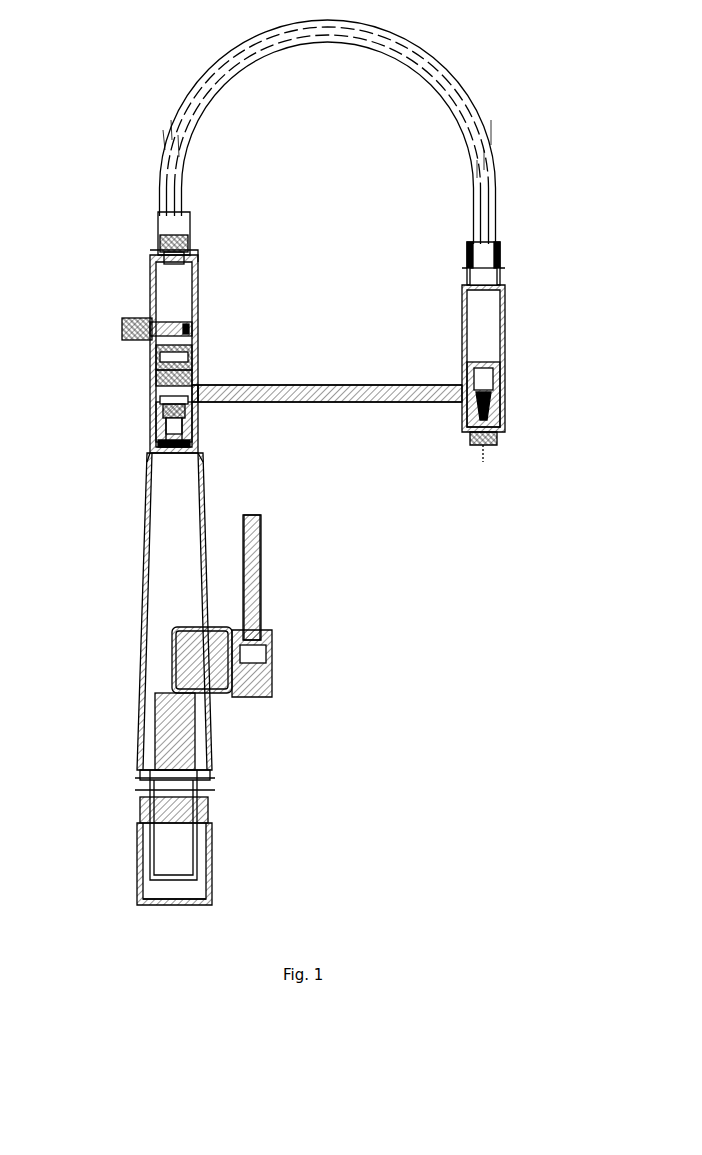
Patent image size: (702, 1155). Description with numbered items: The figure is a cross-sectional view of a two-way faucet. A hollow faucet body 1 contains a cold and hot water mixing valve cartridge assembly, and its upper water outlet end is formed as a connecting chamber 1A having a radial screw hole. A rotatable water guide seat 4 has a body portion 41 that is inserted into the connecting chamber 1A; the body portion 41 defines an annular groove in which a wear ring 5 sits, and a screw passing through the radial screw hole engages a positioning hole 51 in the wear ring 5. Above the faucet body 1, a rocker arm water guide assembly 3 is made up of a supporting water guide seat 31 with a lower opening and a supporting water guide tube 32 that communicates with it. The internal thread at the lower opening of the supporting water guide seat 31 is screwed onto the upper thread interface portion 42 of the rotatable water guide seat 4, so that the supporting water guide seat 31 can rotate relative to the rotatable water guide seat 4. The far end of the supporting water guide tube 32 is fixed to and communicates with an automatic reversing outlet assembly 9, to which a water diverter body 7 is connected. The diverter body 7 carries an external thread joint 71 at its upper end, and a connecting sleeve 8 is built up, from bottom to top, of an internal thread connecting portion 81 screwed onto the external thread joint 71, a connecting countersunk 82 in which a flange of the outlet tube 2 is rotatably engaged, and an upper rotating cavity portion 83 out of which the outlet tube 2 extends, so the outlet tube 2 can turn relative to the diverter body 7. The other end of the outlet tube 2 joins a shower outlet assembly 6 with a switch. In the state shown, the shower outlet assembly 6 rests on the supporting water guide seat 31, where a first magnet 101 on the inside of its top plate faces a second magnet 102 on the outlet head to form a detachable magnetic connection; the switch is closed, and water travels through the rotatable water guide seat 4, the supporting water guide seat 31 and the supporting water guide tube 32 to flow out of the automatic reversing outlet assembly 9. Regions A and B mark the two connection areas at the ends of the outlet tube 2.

The faucet body 1 is at (130, 655).
The connecting chamber 1A is at (152, 456).
The outlet tube 2 is at (435, 60).
The rocker arm water guide assembly 3 is at (151, 410).
The supporting water guide seat 31 is at (154, 400).
The supporting water guide tube 32 is at (312, 402).
The rotatable water guide seat 4 is at (190, 438).
The body portion 41 is at (183, 447).
The upper thread interface portion 42 is at (196, 392).
The wear ring 5 is at (158, 424).
The positioning hole 51 is at (195, 422).
The shower outlet assembly 6 is at (205, 330).
The water diverter body 7 is at (480, 350).
The external thread joint 71 is at (466, 276).
The connecting sleeve 8 is at (503, 262).
The internal thread connecting portion 81 is at (500, 276).
The connecting countersunk 82 is at (466, 262).
The upper rotating cavity portion 83 is at (497, 243).
The automatic reversing outlet assembly 9 is at (508, 400).
The first magnet 101 is at (155, 372).
The second magnet 102 is at (193, 362).
The detail region A is at (128, 298).
The detail region B is at (525, 364).